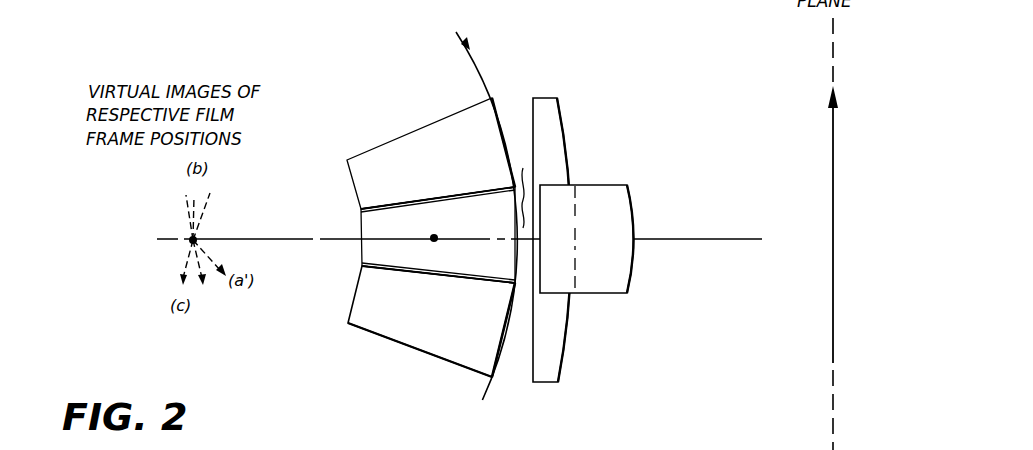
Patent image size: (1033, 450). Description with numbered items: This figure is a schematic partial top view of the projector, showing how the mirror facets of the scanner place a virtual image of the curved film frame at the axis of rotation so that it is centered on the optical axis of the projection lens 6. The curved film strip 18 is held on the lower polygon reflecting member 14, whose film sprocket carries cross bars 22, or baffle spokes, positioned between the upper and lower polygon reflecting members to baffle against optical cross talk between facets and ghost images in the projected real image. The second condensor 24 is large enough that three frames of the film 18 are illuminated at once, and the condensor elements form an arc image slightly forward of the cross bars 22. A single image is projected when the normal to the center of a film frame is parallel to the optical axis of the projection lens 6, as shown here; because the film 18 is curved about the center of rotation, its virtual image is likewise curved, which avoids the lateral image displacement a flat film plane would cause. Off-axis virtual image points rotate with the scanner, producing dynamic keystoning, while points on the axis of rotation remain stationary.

The projection lens 6 is at (607, 193).
The lower polygon reflecting member 14 is at (430, 348).
The film 18 is at (483, 70).
The cross bars 22 is at (463, 193).
The condensor 24 is at (565, 117).